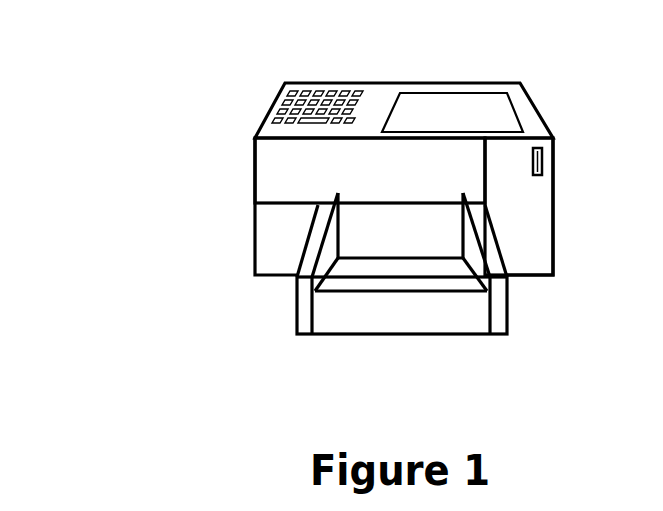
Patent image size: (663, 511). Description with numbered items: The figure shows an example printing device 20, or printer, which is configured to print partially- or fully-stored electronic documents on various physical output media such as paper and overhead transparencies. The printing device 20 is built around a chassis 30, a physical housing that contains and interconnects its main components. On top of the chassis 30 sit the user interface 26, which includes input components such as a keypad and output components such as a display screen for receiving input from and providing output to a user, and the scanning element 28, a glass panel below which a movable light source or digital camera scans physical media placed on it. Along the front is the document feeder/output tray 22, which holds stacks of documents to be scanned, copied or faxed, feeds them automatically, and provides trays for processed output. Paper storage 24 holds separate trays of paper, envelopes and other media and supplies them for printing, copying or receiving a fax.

The printing device 20 is at (88, 113).
The document feeder/output tray 22 is at (297, 310).
The paper storage 24 is at (555, 227).
The user interface 26 is at (285, 106).
The scanning element 28 is at (518, 115).
The chassis 30 is at (256, 175).